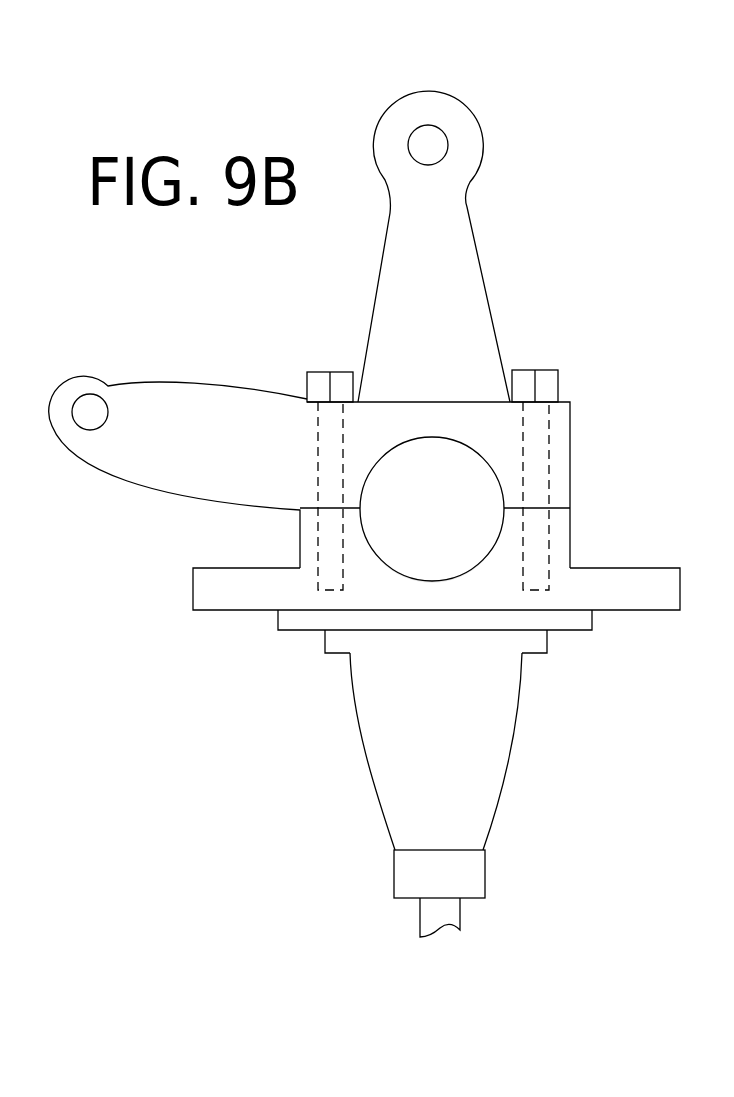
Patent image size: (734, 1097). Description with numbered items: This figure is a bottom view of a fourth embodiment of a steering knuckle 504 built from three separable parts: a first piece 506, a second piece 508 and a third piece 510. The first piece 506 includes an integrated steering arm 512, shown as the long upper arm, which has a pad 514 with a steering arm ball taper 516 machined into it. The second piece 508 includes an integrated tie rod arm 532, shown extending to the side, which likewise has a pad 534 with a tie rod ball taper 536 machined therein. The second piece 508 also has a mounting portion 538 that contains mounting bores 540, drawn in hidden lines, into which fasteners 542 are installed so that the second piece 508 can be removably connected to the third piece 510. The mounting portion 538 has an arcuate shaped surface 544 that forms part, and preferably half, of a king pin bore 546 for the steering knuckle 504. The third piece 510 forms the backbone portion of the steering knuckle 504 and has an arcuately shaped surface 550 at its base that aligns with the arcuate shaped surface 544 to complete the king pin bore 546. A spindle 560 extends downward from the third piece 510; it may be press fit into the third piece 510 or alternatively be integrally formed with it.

The steering knuckle 504 is at (205, 290).
The first piece 506 is at (535, 282).
The second piece 508 is at (262, 382).
The third piece 510 is at (168, 600).
The steering arm 512 is at (398, 264).
The pad 514 is at (463, 148).
The steering arm ball taper 516 is at (432, 142).
The tie rod arm 532 is at (185, 467).
The pad 534 is at (63, 434).
The tie rod ball taper 536 is at (93, 413).
The mounting portion 538 is at (505, 438).
The mounting bores 540 is at (328, 425).
The fasteners 542 is at (346, 385).
The arcuate shaped surface 544 is at (422, 437).
The king pin bore 546 is at (450, 494).
The arcuately shaped surface 550 is at (415, 576).
The spindle 560 is at (487, 766).